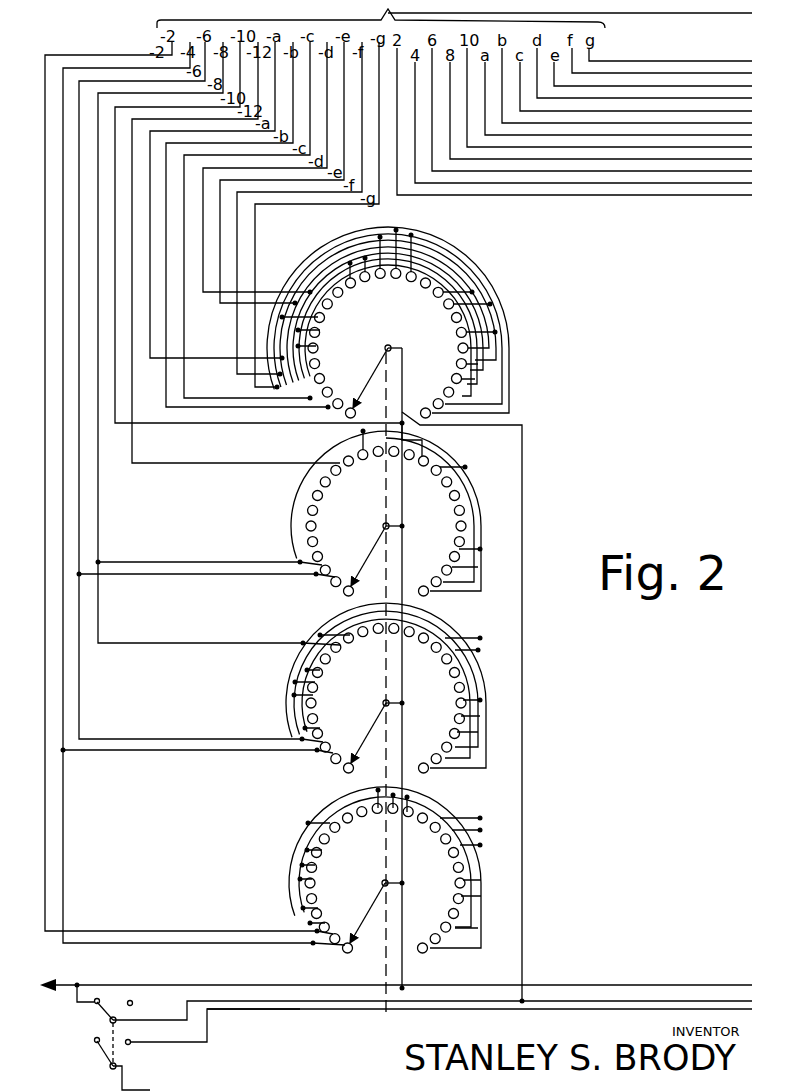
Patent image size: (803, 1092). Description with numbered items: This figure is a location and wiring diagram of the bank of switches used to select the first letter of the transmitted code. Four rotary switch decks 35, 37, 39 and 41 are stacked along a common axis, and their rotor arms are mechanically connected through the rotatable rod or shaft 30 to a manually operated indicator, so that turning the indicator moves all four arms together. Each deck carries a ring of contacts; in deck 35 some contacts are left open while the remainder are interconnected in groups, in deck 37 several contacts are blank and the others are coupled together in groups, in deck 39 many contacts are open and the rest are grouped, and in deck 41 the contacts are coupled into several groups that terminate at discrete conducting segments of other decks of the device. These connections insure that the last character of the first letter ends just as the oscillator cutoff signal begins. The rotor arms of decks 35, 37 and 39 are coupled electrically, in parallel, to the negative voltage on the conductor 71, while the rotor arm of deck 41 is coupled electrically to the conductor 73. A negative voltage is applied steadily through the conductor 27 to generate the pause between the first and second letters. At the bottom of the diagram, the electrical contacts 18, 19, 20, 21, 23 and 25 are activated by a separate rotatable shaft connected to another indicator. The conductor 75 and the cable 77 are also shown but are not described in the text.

The electrical contact 18 is at (110, 1069).
The electrical contact 19 is at (93, 1003).
The electrical contact 20 is at (108, 1020).
The electrical contact 21 is at (94, 1042).
The electrical contact 23 is at (133, 1003).
The electrical contact 25 is at (132, 1045).
The conductor 27 is at (46, 978).
The rotatable rod or shaft 30 is at (383, 964).
The deck 35 is at (385, 870).
The deck 37 is at (386, 688).
The deck 39 is at (386, 513).
The deck 41 is at (388, 325).
The conductor 71 is at (588, 998).
The conductor 73 is at (660, 1008).
The conductor 75 is at (296, 1011).
The cable 77 is at (703, 17).